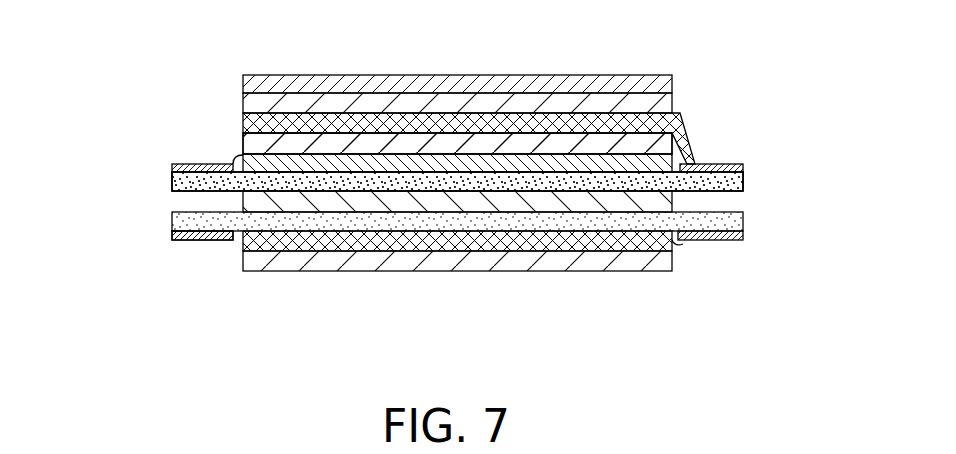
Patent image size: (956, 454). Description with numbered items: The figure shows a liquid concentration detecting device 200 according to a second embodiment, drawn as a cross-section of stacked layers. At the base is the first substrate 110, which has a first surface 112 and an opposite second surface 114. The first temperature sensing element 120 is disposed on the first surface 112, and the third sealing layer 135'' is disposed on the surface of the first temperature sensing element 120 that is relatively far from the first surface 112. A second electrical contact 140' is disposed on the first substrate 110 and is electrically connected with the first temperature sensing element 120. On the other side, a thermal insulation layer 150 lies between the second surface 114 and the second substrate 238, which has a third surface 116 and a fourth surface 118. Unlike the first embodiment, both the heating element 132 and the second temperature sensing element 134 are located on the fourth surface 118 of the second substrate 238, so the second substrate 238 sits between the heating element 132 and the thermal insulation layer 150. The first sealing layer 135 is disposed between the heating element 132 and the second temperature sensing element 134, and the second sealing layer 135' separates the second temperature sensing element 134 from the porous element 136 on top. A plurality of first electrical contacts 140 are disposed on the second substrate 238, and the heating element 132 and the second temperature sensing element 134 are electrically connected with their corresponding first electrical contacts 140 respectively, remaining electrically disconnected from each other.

The liquid concentration detecting device 200 is at (471, 194).
The porous element 136 is at (253, 84).
The second sealing layer 135' is at (413, 94).
The second temperature sensing element 134 is at (677, 122).
The first sealing layer 135 is at (513, 128).
The heating element 132 is at (257, 150).
The fourth surface 118 is at (292, 171).
The first electrical contacts 140 is at (476, 154).
The third surface 116 is at (292, 192).
The second substrate 238 is at (176, 181).
The second surface 114 is at (353, 191).
The thermal insulation layer 150 is at (250, 202).
The first substrate 110 is at (738, 223).
The second electrical contact 140' is at (497, 245).
The first surface 112 is at (190, 235).
The first temperature sensing element 120 is at (665, 247).
The third sealing layer 135'' is at (506, 282).